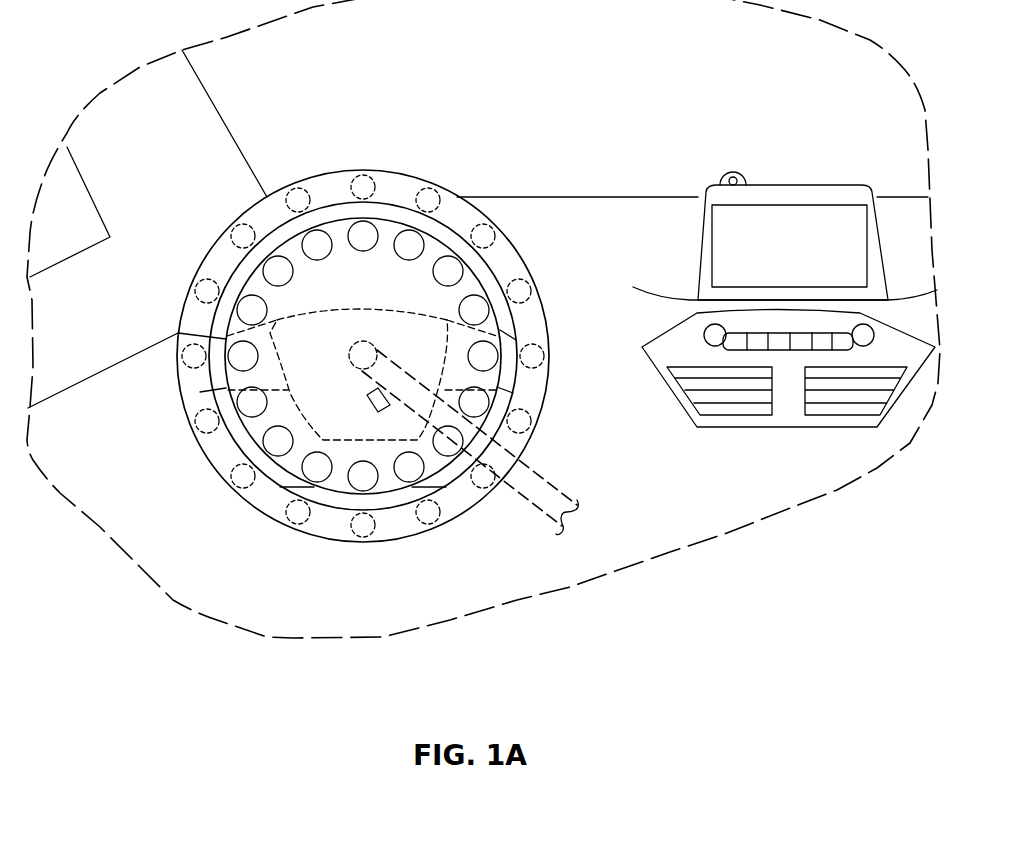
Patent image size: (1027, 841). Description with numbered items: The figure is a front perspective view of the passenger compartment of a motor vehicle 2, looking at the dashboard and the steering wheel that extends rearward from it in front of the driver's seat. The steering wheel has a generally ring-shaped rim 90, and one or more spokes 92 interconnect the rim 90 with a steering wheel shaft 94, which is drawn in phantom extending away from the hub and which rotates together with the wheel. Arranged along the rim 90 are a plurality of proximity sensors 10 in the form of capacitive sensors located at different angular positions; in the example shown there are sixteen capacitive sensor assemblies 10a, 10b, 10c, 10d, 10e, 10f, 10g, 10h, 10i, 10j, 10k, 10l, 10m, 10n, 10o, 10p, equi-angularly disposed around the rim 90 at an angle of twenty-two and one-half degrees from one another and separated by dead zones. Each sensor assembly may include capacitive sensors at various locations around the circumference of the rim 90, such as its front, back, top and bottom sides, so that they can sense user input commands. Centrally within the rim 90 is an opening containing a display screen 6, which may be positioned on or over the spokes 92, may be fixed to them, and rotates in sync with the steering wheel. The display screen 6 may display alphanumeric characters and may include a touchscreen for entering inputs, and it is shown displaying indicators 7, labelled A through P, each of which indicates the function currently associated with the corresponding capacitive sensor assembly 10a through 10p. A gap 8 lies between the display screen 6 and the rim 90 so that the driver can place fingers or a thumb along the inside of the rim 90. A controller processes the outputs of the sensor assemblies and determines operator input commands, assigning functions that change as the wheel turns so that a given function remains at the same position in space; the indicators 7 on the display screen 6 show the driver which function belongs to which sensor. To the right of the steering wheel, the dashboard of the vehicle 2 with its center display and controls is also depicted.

The motor vehicle 2 is at (678, 163).
The display screen 6 is at (350, 280).
The indicators 7 is at (298, 250).
The gap 8 is at (492, 280).
The proximity sensors 10 is at (425, 165).
The capacitive sensor assembly 10a is at (360, 177).
The capacitive sensor assembly 10b is at (428, 187).
The capacitive sensor assembly 10c is at (492, 227).
The capacitive sensor assembly 10d is at (531, 283).
The capacitive sensor assembly 10e is at (540, 353).
The capacitive sensor assembly 10f is at (533, 422).
The capacitive sensor assembly 10g is at (491, 487).
The capacitive sensor assembly 10h is at (430, 524).
The capacitive sensor assembly 10i is at (360, 537).
The capacitive sensor assembly 10j is at (292, 517).
The capacitive sensor assembly 10k is at (233, 478).
The capacitive sensor assembly 10l is at (197, 425).
The capacitive sensor assembly 10m is at (181, 354).
The capacitive sensor assembly 10n is at (194, 288).
The capacitive sensor assembly 10o is at (233, 230).
The capacitive sensor assembly 10p is at (293, 193).
The rim 90 is at (393, 523).
The spokes 92 is at (200, 392).
The steering wheel shaft 94 is at (537, 525).